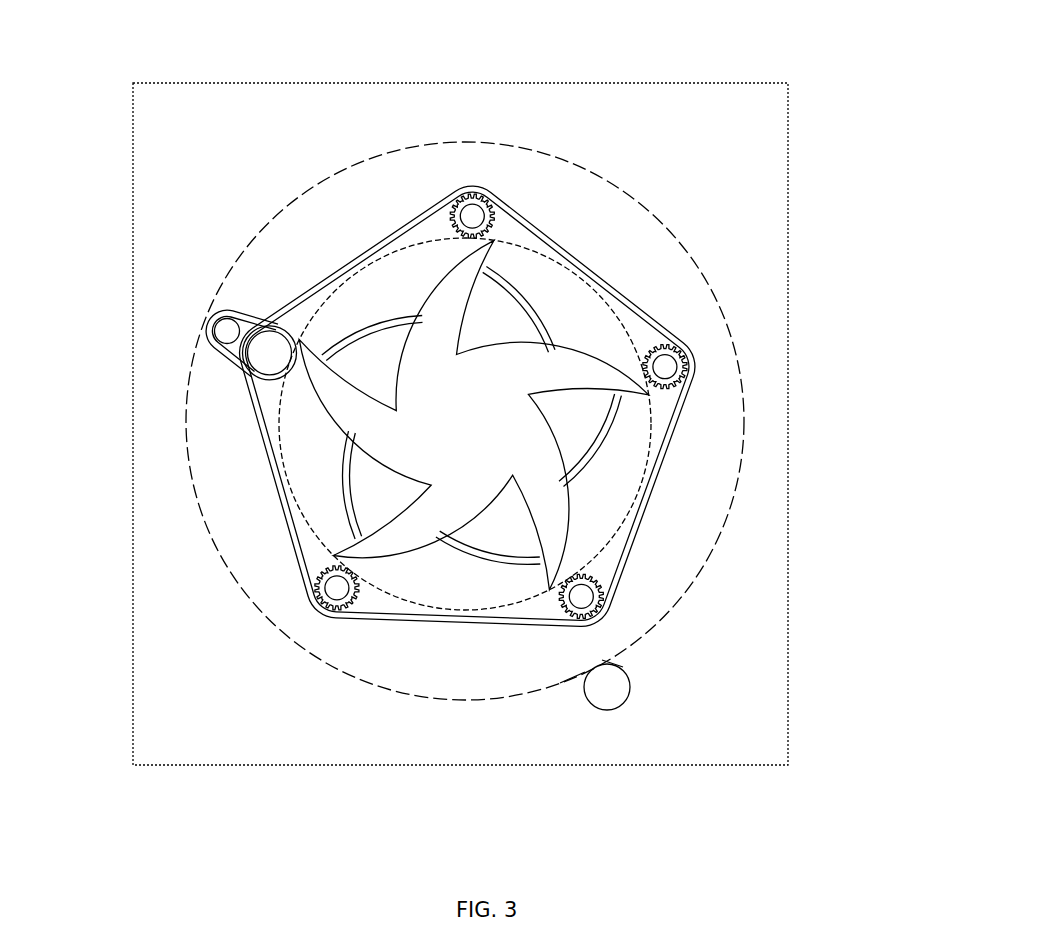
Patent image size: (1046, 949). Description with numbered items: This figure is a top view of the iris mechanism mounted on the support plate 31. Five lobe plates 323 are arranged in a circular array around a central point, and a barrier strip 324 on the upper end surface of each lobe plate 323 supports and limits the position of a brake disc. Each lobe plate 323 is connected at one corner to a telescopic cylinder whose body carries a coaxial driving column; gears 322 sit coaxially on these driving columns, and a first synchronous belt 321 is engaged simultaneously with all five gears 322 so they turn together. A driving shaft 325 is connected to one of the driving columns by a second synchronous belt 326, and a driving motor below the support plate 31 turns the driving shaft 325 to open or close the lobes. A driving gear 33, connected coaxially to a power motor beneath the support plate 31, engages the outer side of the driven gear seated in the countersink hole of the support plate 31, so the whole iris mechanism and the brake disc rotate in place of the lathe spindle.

The support plate 31 is at (737, 583).
The driving gear 33 is at (615, 690).
The first synchronous belt 321 is at (673, 430).
The gear 322 is at (693, 353).
The lobe plate 323 is at (572, 307).
The barrier strip 324 is at (368, 333).
The driving shaft 325 is at (227, 332).
The second synchronous belt 326 is at (230, 358).